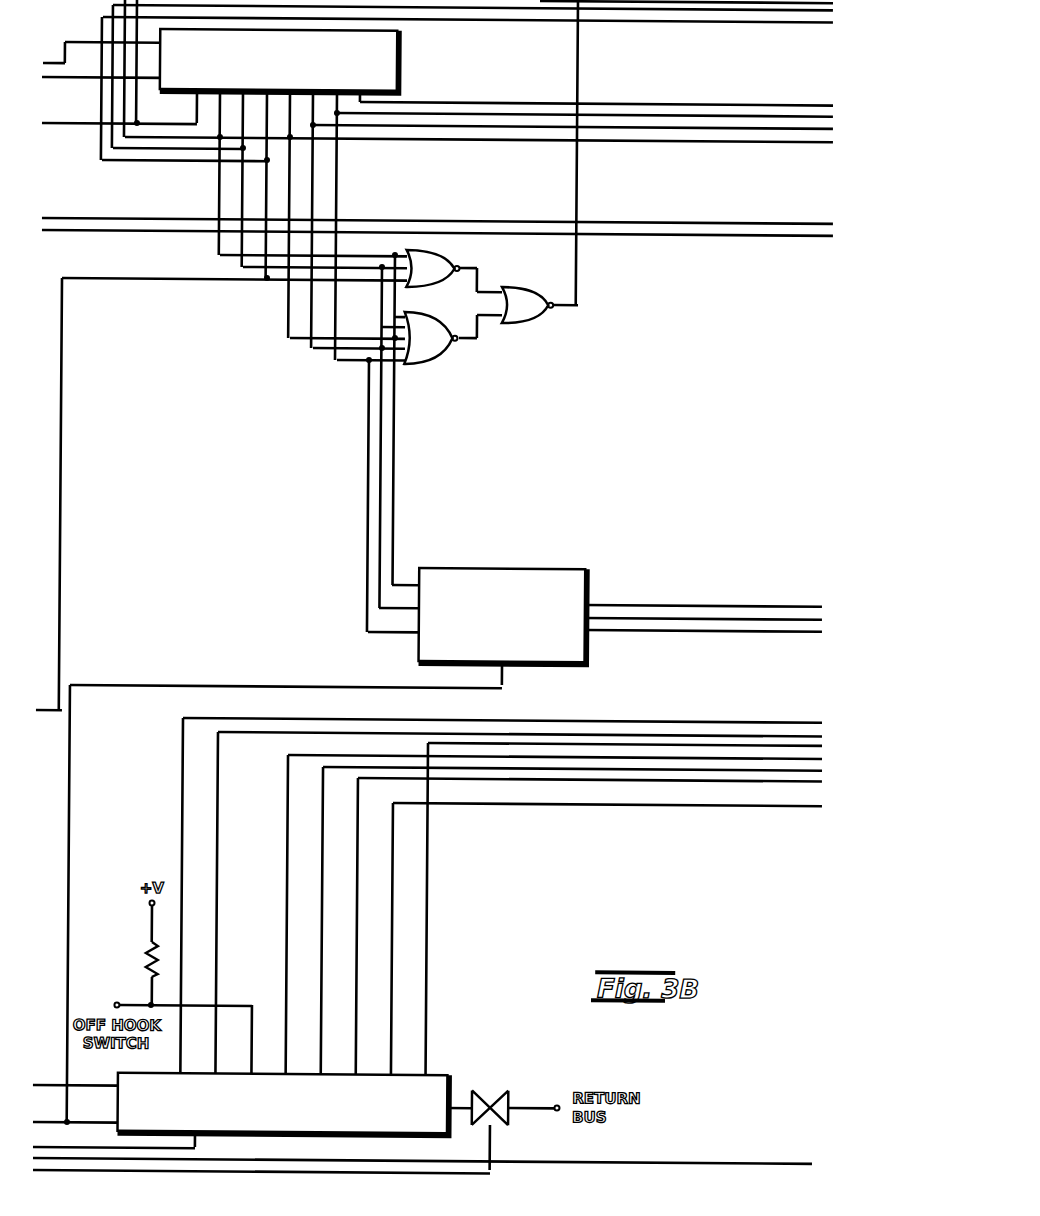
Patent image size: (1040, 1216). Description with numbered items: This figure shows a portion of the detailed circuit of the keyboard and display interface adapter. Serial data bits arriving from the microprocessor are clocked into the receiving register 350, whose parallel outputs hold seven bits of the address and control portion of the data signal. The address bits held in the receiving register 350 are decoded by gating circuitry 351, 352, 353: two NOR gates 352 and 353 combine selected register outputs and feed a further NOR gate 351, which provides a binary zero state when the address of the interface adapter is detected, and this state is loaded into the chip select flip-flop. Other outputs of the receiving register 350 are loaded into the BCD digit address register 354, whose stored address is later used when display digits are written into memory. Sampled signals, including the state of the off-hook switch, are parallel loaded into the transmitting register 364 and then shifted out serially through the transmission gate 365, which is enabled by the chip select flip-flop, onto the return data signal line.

The receiving register 350 is at (396, 67).
The NOR gate 351 is at (531, 321).
The gating circuitry 352 is at (454, 255).
The gating circuitry 353 is at (431, 362).
The BCD digit address register 354 is at (530, 567).
The transmitting register 364 is at (456, 1063).
The transmission gate 365 is at (512, 1090).